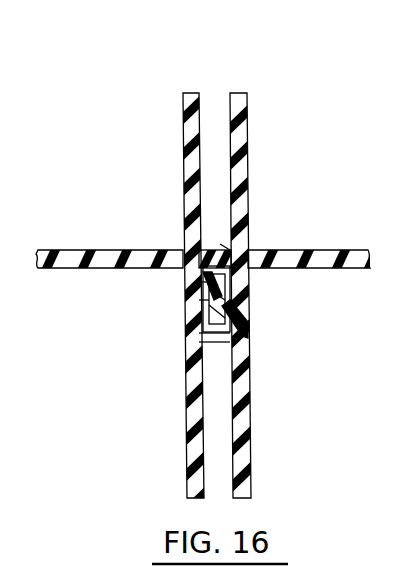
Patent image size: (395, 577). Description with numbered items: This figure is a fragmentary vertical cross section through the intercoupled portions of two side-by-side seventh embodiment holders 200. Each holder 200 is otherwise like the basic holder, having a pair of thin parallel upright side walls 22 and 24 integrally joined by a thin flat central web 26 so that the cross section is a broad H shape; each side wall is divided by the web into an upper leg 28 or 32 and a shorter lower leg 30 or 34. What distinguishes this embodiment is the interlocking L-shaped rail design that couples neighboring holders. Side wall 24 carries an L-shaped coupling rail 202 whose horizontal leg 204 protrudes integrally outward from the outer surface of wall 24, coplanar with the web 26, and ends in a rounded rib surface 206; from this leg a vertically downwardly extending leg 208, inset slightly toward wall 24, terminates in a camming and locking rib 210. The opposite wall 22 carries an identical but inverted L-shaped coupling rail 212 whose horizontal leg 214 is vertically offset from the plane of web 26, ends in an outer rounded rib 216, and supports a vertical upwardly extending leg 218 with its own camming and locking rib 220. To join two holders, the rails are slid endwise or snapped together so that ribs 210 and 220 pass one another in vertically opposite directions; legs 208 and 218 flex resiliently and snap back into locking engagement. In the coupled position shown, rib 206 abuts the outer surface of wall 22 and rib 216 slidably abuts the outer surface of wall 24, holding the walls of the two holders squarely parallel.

The side wall 22 is at (256, 139).
The side wall 24 is at (216, 236).
The central web 26 is at (99, 236).
The upper leg 28 is at (250, 163).
The lower leg 30 is at (243, 431).
The upper leg 32 is at (183, 132).
The lower leg 34 is at (188, 465).
The holder 200 is at (262, 99).
The L-shaped coupling rail 202 is at (176, 163).
The horizontal leg 204 is at (224, 250).
The rounded rib surface 206 is at (225, 262).
The vertically downwardly extending leg 208 is at (224, 306).
The camming and locking rib 210 is at (224, 345).
The L-shaped coupling rail 212 is at (212, 360).
The horizontal leg 214 is at (185, 362).
The outer rounded rib 216 is at (185, 334).
The vertical upwardly extending leg 218 is at (185, 300).
The camming and locking rib 220 is at (185, 282).